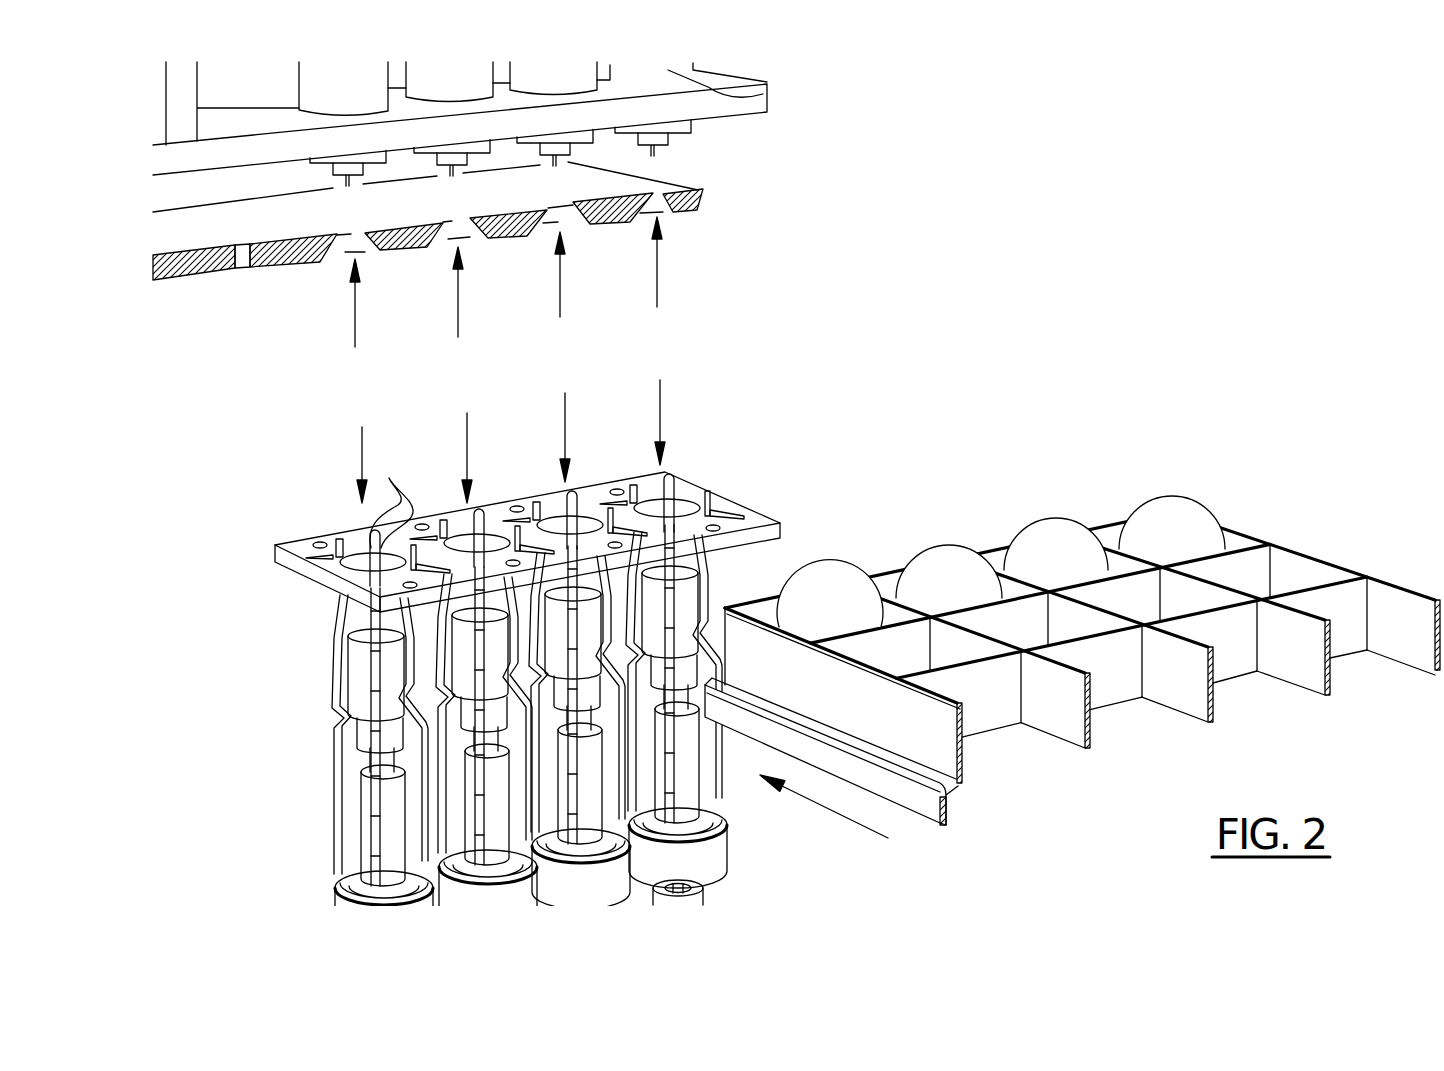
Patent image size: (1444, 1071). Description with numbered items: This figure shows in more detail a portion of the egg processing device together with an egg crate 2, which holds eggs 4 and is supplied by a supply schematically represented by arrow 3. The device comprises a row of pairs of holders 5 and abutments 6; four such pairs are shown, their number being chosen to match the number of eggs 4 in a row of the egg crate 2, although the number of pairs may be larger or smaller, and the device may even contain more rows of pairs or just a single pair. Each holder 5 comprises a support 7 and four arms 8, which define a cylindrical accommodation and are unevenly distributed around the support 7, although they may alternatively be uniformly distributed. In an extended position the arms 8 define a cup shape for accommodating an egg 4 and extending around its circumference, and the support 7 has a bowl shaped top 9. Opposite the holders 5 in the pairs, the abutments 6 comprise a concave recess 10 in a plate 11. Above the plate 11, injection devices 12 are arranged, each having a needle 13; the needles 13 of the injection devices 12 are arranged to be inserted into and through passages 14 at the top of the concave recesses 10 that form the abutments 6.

The egg crate 2 is at (1300, 567).
The arrow 3 is at (812, 806).
The eggs 4 is at (820, 577).
The holders 5 is at (502, 441).
The abutments 6 is at (498, 283).
The support 7 is at (365, 695).
The arms 8 is at (235, 597).
The bowl shaped top 9 is at (360, 634).
The concave recess 10 is at (367, 252).
The plate 11 is at (703, 207).
The injection devices 12 is at (323, 100).
The needle 13 is at (346, 187).
The passages 14 is at (351, 235).